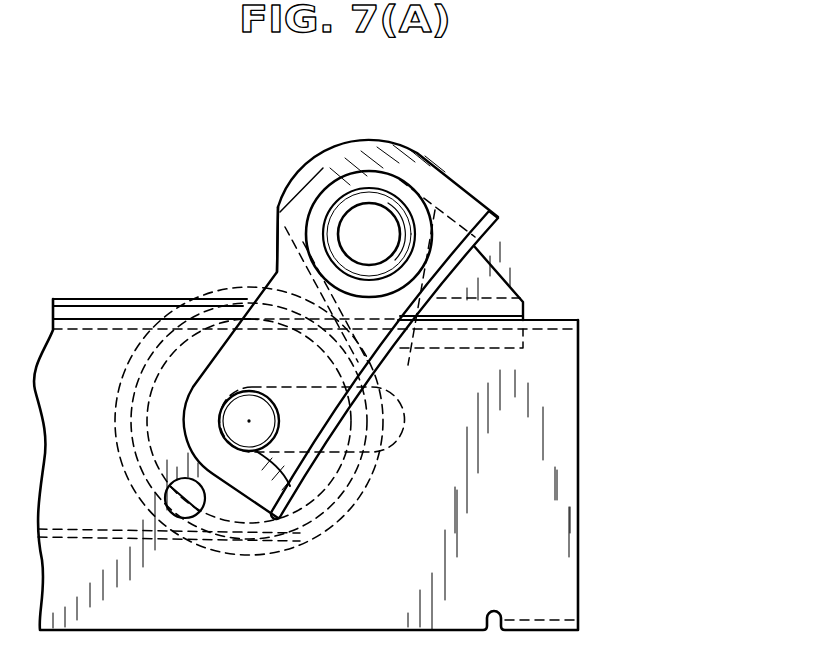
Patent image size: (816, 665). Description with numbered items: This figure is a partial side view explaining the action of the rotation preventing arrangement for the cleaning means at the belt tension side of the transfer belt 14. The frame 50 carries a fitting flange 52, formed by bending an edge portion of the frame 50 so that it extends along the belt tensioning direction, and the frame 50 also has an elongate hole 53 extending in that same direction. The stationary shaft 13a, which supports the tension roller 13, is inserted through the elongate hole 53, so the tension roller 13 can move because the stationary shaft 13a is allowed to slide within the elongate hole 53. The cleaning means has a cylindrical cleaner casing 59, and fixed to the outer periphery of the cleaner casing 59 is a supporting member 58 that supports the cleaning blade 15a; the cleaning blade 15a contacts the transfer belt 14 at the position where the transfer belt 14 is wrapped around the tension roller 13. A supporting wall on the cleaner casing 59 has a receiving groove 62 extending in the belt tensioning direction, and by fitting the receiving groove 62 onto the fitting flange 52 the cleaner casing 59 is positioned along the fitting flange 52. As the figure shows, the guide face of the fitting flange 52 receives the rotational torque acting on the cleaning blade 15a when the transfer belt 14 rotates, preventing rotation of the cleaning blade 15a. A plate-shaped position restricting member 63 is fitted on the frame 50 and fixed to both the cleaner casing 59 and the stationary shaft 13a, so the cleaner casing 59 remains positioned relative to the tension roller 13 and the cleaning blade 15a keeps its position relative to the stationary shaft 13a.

The frame 50 is at (568, 477).
The transfer belt 14 is at (110, 299).
The fitting flange 52 is at (580, 324).
The tension roller 13 is at (119, 395).
The stationary shaft 13a is at (290, 488).
The cleaning blade 15a is at (272, 262).
The supporting member 58 is at (315, 165).
The cleaner casing 59 is at (400, 183).
The position restricting member 63 is at (472, 212).
The receiving groove 62 is at (523, 317).
The elongate hole 53 is at (393, 402).